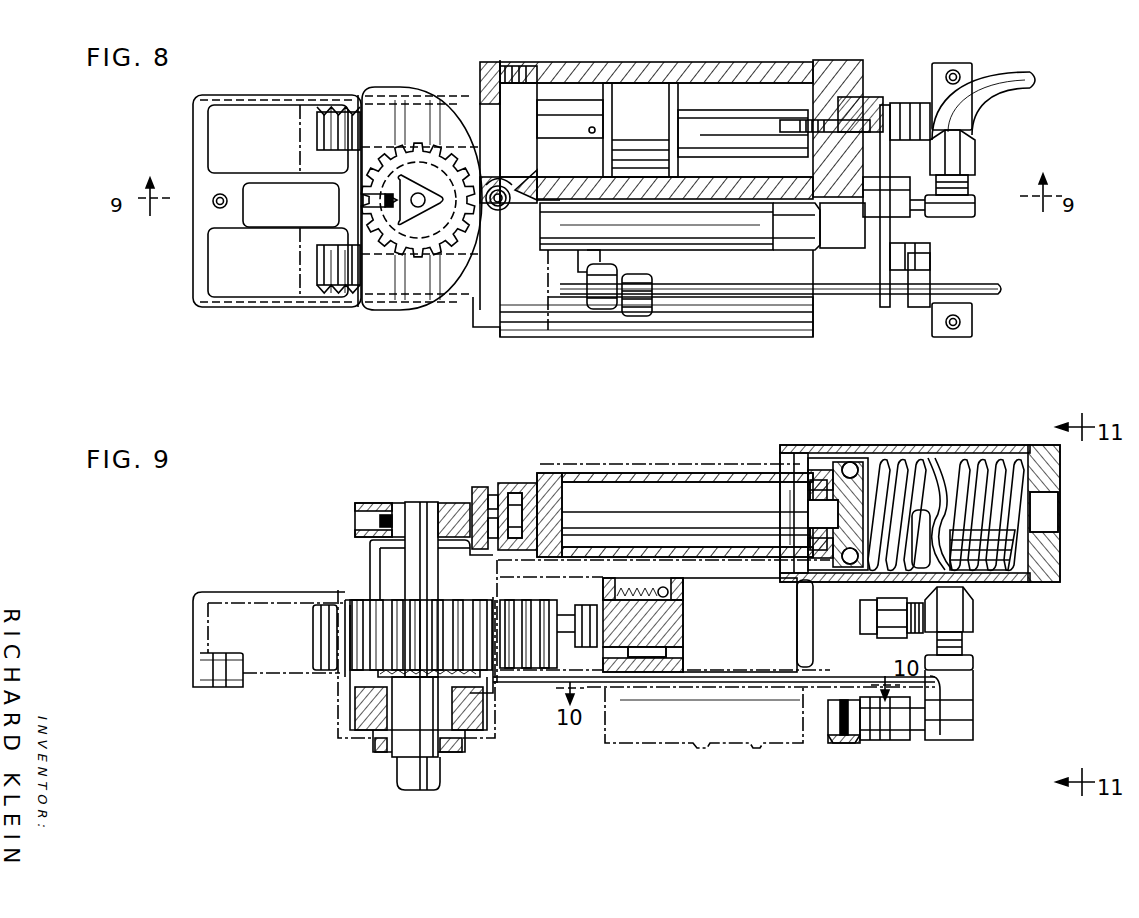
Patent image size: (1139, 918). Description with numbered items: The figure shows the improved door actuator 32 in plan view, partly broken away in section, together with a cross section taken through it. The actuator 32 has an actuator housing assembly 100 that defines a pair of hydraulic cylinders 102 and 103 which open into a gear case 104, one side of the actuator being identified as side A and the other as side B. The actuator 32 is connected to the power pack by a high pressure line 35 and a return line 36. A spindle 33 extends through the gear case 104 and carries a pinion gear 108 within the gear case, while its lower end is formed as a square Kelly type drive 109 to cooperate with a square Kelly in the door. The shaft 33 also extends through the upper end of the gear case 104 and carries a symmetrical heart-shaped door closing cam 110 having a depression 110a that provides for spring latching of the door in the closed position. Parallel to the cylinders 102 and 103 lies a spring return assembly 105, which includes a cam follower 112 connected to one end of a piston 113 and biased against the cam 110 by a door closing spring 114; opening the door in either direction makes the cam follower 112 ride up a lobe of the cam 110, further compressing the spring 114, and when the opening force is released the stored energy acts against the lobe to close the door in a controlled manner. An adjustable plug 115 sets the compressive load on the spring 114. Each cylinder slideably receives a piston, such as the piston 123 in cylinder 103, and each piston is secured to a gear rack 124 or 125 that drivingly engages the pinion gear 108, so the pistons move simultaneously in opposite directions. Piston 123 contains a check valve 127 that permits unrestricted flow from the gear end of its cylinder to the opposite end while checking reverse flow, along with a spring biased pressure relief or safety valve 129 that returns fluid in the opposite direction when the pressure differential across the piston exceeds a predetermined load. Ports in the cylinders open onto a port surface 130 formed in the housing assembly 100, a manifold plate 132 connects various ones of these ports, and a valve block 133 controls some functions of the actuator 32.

In FIG. 8, the door actuator 32 is at (600, 364).
In FIG. 9, the door actuator 32 is at (674, 782).
In FIG. 8, the spindle 33 is at (409, 213).
In FIG. 9, the spindle 33 is at (440, 778).
In FIG. 8, the high pressure line 35 is at (1015, 84).
In FIG. 9, the high pressure line 35 is at (970, 712).
In FIG. 8, the return line 36 is at (985, 298).
In FIG. 8, the actuator housing assembly 100 is at (845, 322).
In FIG. 9, the actuator housing assembly 100 is at (682, 464).
In FIG. 8, the hydraulic cylinder 102 is at (712, 316).
In FIG. 8, the hydraulic cylinder 103 is at (752, 80).
In FIG. 9, the hydraulic cylinder 103 is at (593, 665).
In FIG. 8, the gear case 104 is at (237, 290).
In FIG. 9, the gear case 104 is at (298, 665).
In FIG. 8, the spring return assembly 105 is at (565, 252).
In FIG. 9, the spring return assembly 105 is at (890, 444).
In FIG. 8, the pinion gear 108 is at (310, 292).
In FIG. 9, the pinion gear 108 is at (368, 612).
In FIG. 9, the square Kelly type drive 109 is at (402, 770).
In FIG. 8, the door closing cam 110 is at (402, 312).
In FIG. 9, the door closing cam 110 is at (362, 505).
In FIG. 8, the depression 110a is at (488, 190).
In FIG. 9, the depression 110a is at (480, 486).
In FIG. 8, the cam follower 112 is at (537, 205).
In FIG. 9, the cam follower 112 is at (517, 483).
In FIG. 9, the piston 113 is at (713, 490).
In FIG. 9, the door closing spring 114 is at (996, 470).
In FIG. 9, the adjustable plug 115 is at (1060, 470).
In FIG. 8, the piston 123 is at (650, 94).
In FIG. 9, the piston 123 is at (672, 667).
In FIG. 8, the gear rack 124 is at (341, 110).
In FIG. 8, the gear rack 125 is at (349, 296).
In FIG. 9, the gear rack 125 is at (531, 670).
In FIG. 9, the check valve 127 is at (636, 667).
In FIG. 9, the pressure relief valve 129 is at (622, 590).
In FIG. 9, the port surface 130 is at (790, 692).
In FIG. 9, the manifold plate 132 is at (850, 700).
In FIG. 9, the valve block 133 is at (770, 728).